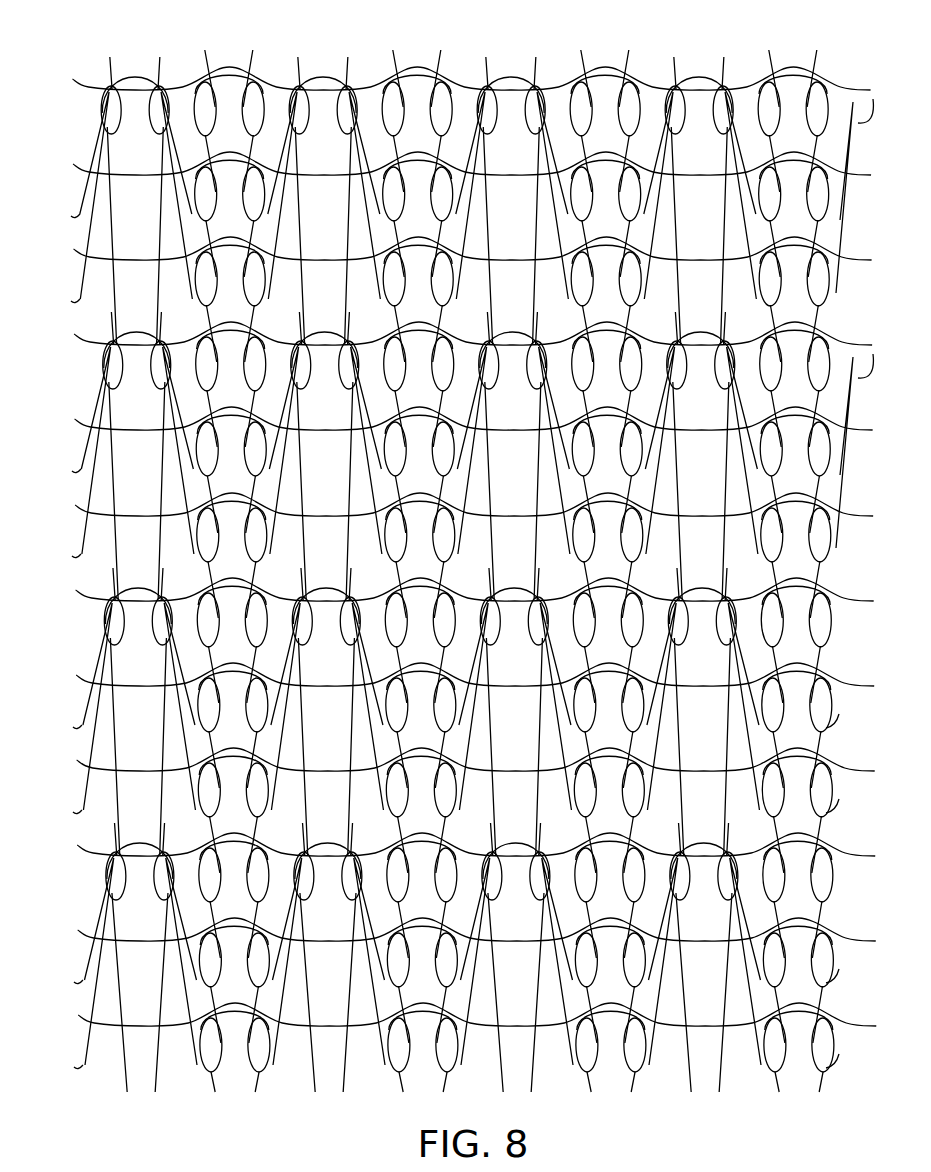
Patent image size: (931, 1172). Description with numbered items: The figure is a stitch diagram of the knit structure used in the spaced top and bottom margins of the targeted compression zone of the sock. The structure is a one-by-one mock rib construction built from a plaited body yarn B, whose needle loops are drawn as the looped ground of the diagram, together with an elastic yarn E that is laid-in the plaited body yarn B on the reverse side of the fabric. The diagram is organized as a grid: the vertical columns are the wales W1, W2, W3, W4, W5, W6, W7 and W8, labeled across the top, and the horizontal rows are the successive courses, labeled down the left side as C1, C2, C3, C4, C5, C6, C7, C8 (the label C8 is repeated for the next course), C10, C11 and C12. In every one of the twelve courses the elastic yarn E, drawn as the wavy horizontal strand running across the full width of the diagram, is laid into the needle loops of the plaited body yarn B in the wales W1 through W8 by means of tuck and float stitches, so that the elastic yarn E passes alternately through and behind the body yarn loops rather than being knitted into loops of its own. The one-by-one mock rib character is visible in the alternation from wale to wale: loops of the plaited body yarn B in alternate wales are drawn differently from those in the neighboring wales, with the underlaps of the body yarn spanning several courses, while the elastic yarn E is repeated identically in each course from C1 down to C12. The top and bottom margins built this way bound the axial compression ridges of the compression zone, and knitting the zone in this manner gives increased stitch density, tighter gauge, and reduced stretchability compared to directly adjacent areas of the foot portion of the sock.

The plaited body yarn B is at (112, 72).
The elastic yarn E is at (72, 165).
The wale W1 is at (134, 556).
The wale W2 is at (232, 556).
The wale W3 is at (326, 556).
The wale W4 is at (420, 556).
The wale W5 is at (514, 556).
The wale W6 is at (608, 556).
The wale W7 is at (702, 556).
The wale W8 is at (816, 556).
The course C1 is at (450, 97).
The course C2 is at (450, 182).
The course C3 is at (450, 267).
The course C4 is at (450, 353).
The course C5 is at (451, 438).
The course C6 is at (451, 524).
The course C7 is at (451, 609).
The course C8 is at (452, 738).
The course C10 is at (451, 866).
The course C11 is at (451, 951).
The course C12 is at (452, 1037).